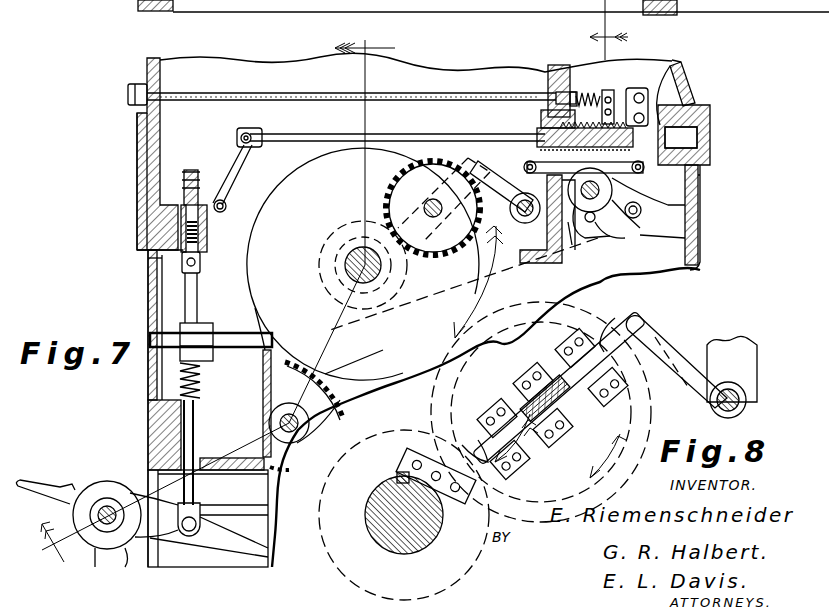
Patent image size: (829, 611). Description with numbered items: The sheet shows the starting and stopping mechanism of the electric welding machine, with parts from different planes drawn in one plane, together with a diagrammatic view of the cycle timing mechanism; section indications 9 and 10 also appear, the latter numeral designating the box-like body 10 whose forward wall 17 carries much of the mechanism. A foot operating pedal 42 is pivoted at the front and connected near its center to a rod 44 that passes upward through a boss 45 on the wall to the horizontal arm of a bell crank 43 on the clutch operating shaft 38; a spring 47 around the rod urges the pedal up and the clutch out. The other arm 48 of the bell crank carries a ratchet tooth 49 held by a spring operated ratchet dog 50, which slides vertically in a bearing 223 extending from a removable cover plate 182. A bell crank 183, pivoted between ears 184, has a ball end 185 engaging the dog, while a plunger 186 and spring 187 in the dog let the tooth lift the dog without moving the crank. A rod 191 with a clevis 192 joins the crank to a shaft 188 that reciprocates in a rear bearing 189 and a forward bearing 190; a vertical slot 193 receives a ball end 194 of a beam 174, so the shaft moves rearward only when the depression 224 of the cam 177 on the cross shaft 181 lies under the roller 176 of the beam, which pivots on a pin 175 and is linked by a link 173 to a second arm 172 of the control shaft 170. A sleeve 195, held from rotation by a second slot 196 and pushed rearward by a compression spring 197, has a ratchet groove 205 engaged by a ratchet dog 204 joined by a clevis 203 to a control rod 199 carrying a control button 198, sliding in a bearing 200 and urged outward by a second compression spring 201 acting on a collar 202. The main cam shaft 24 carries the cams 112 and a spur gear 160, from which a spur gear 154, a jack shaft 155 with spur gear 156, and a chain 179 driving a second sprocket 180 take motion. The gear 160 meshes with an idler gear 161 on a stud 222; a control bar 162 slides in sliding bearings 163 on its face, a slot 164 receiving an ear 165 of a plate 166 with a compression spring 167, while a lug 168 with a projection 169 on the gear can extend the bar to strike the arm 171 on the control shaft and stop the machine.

In FIG. 7, the section line 9 is at (595, 30).
In FIG. 7, the body portion 10 is at (233, 319).
In FIG. 7, the forward wall 17 is at (150, 378).
In FIG. 7, the main cam shaft 24 is at (345, 268).
In FIG. 8, the main cam shaft 24 is at (366, 516).
In FIG. 7, the clutch operating shaft 38 is at (284, 338).
In FIG. 7, the foot operating pedal 42 is at (80, 485).
In FIG. 7, the bell crank 43 is at (205, 316).
In FIG. 7, the rod 44 is at (186, 432).
In FIG. 7, the boss 45 is at (205, 432).
In FIG. 7, the spring 47 is at (200, 386).
In FIG. 7, the arm of bell crank 48 is at (190, 292).
In FIG. 7, the ratchet tooth 49 is at (182, 272).
In FIG. 7, the ratchet dog 50 is at (226, 206).
In FIG. 7, the cams 112 is at (363, 264).
In FIG. 7, the spur gear 154 is at (361, 357).
In FIG. 7, the jack shaft 155 is at (335, 427).
In FIG. 7, the spur gear 156 is at (300, 455).
In FIG. 7, the spur gear 160 is at (333, 252).
In FIG. 8, the spur gear 160 is at (404, 515).
In FIG. 7, the idler gear 161 is at (433, 208).
In FIG. 8, the idler gear 161 is at (541, 412).
In FIG. 7, the control bar 162 is at (452, 172).
In FIG. 8, the control bar 162 is at (507, 402).
In FIG. 8, the sliding bearings 163 is at (630, 400).
In FIG. 8, the slot 164 is at (562, 345).
In FIG. 8, the ear 165 is at (560, 420).
In FIG. 8, the plate 166 is at (530, 376).
In FIG. 8, the compression spring 167 is at (536, 446).
In FIG. 7, the lug 168 is at (363, 237).
In FIG. 8, the lug 168 is at (422, 458).
In FIG. 8, the projection 169 is at (488, 494).
In FIG. 7, the control shaft 170 is at (519, 220).
In FIG. 8, the control shaft 170 is at (748, 411).
In FIG. 7, the arm 171 is at (500, 194).
In FIG. 8, the arm 171 is at (666, 332).
In FIG. 7, the second arm 172 is at (492, 172).
In FIG. 8, the second arm 172 is at (756, 356).
In FIG. 7, the link 173 is at (641, 210).
In FIG. 7, the beam 174 is at (700, 220).
In FIG. 7, the pivot pin 175 is at (648, 235).
In FIG. 7, the roller 176 is at (602, 240).
In FIG. 7, the cam 177 is at (556, 250).
In FIG. 7, the chain 179 is at (500, 262).
In FIG. 7, the second sprocket 180 is at (598, 224).
In FIG. 7, the cross shaft 181 is at (700, 240).
In FIG. 7, the removable cover plate 182 is at (140, 218).
In FIG. 7, the bell crank 183 is at (238, 170).
In FIG. 7, the ears 184 is at (208, 232).
In FIG. 7, the ball end 185 is at (184, 200).
In FIG. 7, the plunger 186 is at (140, 246).
In FIG. 7, the spring 187 is at (140, 262).
In FIG. 7, the shaft 188 is at (696, 113).
In FIG. 7, the bearing 189 is at (708, 160).
In FIG. 7, the bearing 190 is at (540, 133).
In FIG. 7, the rod 191 is at (330, 140).
In FIG. 7, the clevis 192 is at (262, 128).
In FIG. 7, the vertical slot 193 is at (686, 95).
In FIG. 7, the ball end 194 is at (705, 170).
In FIG. 7, the sleeve 195 is at (615, 115).
In FIG. 7, the second slot 196 is at (705, 186).
In FIG. 7, the compression spring 197 is at (556, 100).
In FIG. 7, the control button 198 is at (128, 103).
In FIG. 7, the control rod 199 is at (221, 93).
In FIG. 7, the bearing 200 is at (600, 93).
In FIG. 7, the second compression spring 201 is at (575, 88).
In FIG. 7, the collar 202 is at (565, 96).
In FIG. 7, the clevis 203 is at (672, 66).
In FIG. 7, the ratchet dog 204 is at (672, 88).
In FIG. 7, the ratchet groove 205 is at (622, 115).
In FIG. 7, the stud 222 is at (444, 222).
In FIG. 7, the bearing 223 is at (207, 250).
In FIG. 7, the depression 224 is at (572, 232).